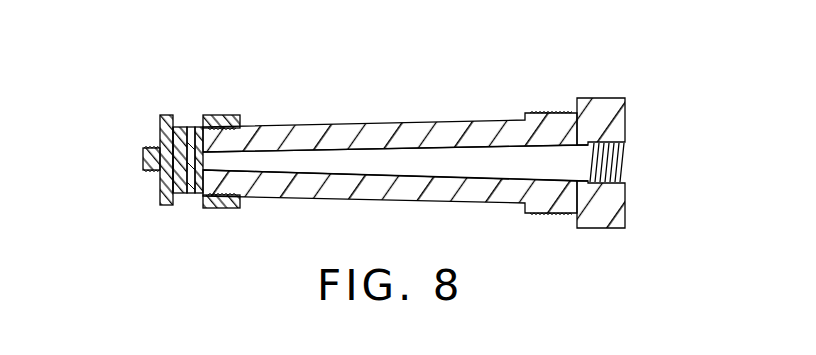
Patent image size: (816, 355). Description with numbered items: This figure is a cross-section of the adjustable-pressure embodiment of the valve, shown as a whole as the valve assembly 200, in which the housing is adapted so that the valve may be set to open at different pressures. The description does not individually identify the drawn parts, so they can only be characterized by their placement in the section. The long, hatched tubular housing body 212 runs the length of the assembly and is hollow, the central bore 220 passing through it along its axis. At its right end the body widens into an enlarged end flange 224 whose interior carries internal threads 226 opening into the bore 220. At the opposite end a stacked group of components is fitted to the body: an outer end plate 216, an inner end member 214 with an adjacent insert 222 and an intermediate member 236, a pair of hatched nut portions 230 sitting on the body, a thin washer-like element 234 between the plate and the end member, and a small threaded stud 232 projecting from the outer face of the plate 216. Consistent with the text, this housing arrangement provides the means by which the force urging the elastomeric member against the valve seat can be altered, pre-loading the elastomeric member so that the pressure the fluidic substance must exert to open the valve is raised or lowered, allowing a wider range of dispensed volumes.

The coupling assembly 200 is at (350, 144).
The tubular body 212 is at (461, 124).
The end member 214 is at (186, 191).
The end plate 216 is at (163, 124).
The bore 220 is at (208, 160).
The insert 222 is at (177, 126).
The flange 224 is at (597, 102).
The internal threads 226 is at (625, 165).
The nut 230 is at (198, 202).
The threaded stud 232 is at (147, 171).
The washer 234 is at (166, 143).
The seal 236 is at (167, 124).